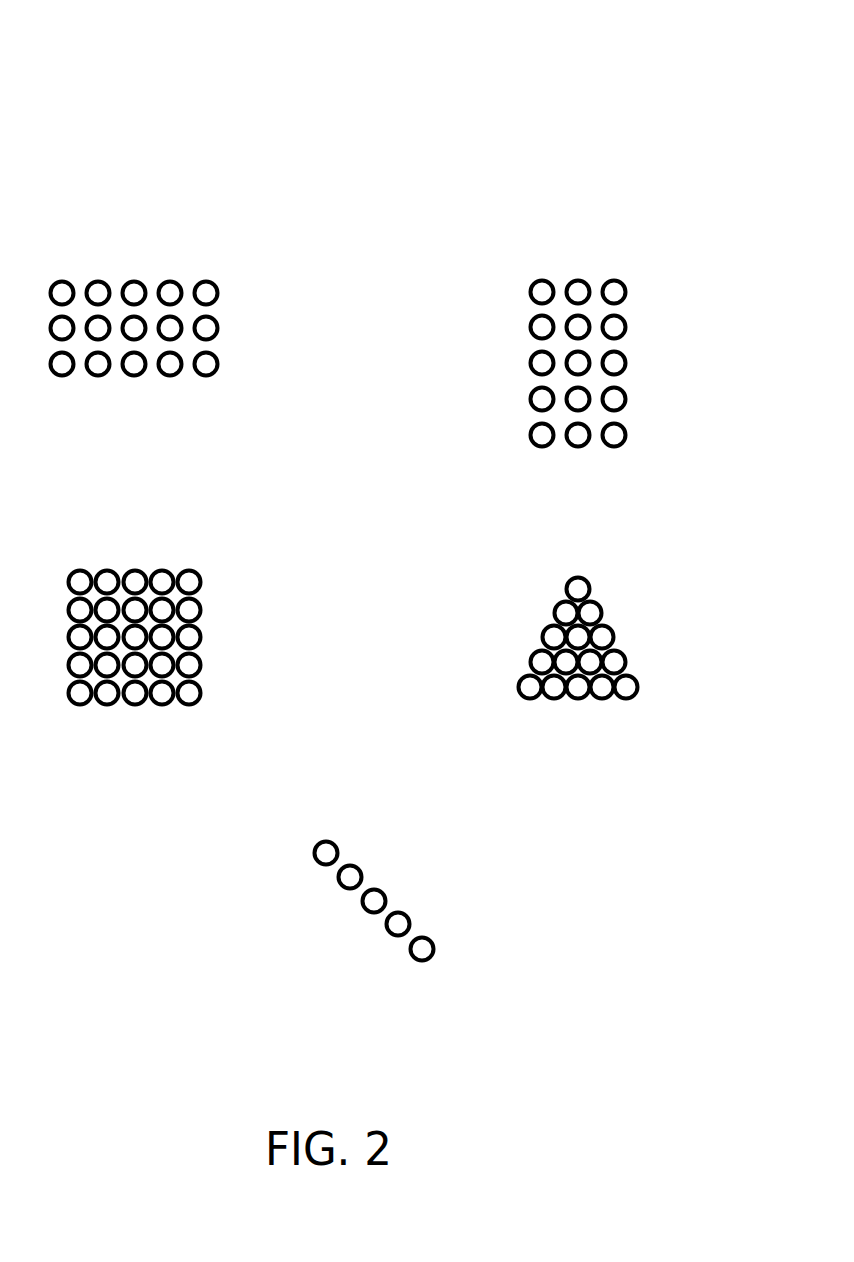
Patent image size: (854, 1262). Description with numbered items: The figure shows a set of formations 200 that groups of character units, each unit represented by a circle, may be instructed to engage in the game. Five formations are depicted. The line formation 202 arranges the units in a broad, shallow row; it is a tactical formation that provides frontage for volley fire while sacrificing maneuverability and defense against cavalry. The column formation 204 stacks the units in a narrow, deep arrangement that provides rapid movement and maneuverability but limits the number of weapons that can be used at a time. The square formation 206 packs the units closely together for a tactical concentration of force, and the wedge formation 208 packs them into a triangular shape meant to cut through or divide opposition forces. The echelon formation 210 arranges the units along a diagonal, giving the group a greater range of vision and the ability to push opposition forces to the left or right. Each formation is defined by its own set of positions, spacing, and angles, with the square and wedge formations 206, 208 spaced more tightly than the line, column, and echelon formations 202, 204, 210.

The set of optical element arrangements 200 is at (416, 82).
The line formation 202 is at (225, 275).
The column formation 204 is at (633, 275).
The square formation 206 is at (213, 573).
The wedge formation 208 is at (587, 572).
The echelon formation 210 is at (332, 839).